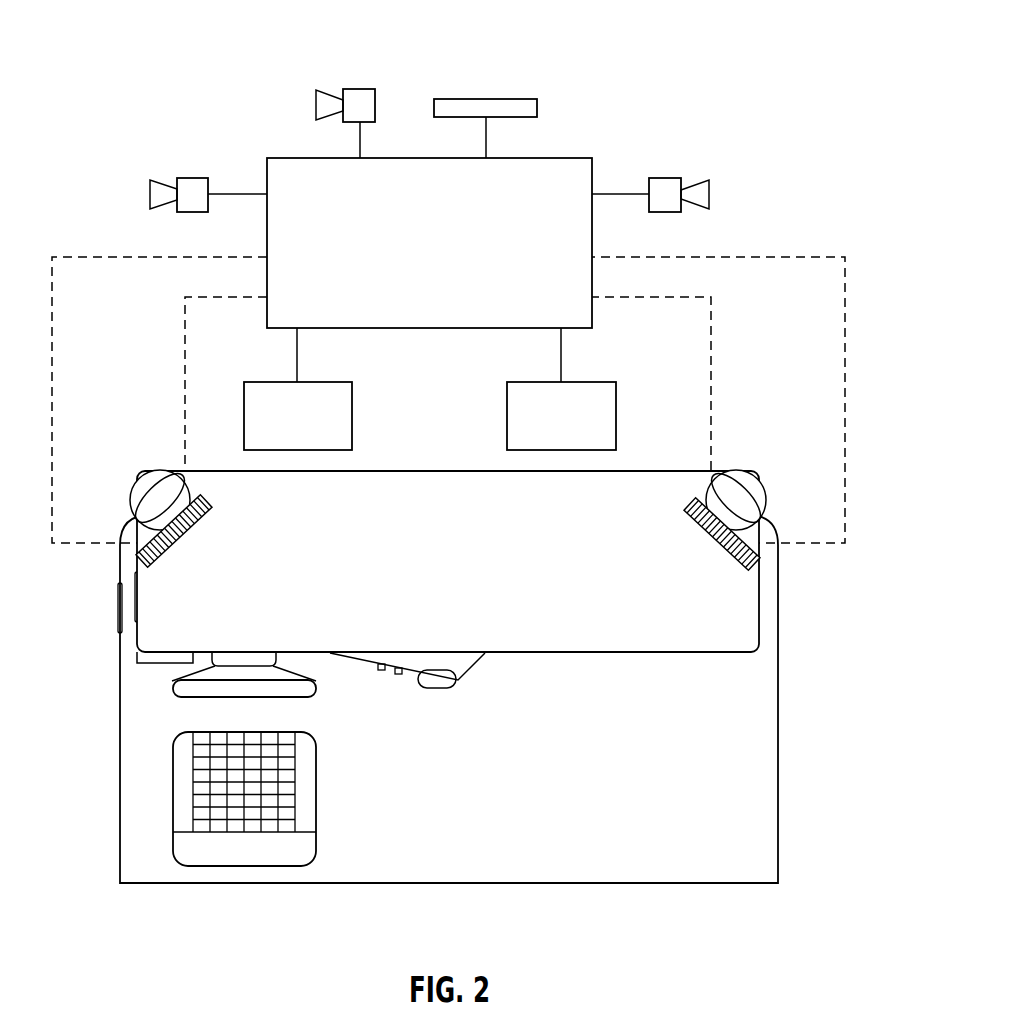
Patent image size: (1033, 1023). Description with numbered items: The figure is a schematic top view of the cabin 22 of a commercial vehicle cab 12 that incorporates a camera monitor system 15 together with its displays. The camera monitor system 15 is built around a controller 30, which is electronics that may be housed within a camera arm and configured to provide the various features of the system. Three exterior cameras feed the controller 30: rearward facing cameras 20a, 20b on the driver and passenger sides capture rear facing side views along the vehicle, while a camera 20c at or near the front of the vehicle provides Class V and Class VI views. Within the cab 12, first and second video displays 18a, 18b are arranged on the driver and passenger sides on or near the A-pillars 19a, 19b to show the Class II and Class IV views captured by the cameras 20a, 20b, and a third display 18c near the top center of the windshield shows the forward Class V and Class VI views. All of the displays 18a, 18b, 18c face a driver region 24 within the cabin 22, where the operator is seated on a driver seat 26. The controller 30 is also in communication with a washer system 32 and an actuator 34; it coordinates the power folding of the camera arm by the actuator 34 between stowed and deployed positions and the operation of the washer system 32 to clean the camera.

The vehicle cab 12 is at (631, 434).
The camera monitor system 15 is at (662, 68).
The first video display 18a is at (164, 486).
The second video display 18b is at (736, 486).
The third display 18c is at (520, 99).
The A-pillar 19a is at (137, 512).
The A-pillar 19b is at (757, 510).
The rearward facing camera 20a is at (193, 177).
The rearward facing camera 20b is at (675, 178).
The camera 20c is at (360, 88).
The cabin 22 is at (681, 791).
The driver region 24 is at (383, 683).
The driver seat 26 is at (300, 789).
The controller 30 is at (538, 158).
The washer system 32 is at (312, 434).
The actuator 34 is at (576, 434).